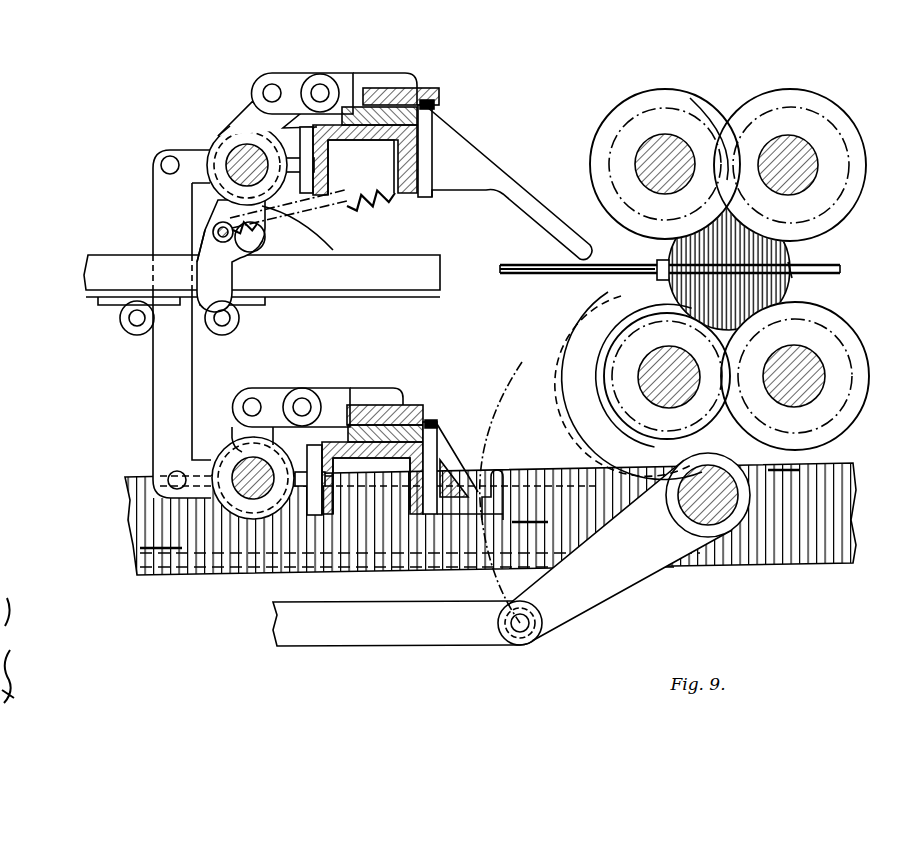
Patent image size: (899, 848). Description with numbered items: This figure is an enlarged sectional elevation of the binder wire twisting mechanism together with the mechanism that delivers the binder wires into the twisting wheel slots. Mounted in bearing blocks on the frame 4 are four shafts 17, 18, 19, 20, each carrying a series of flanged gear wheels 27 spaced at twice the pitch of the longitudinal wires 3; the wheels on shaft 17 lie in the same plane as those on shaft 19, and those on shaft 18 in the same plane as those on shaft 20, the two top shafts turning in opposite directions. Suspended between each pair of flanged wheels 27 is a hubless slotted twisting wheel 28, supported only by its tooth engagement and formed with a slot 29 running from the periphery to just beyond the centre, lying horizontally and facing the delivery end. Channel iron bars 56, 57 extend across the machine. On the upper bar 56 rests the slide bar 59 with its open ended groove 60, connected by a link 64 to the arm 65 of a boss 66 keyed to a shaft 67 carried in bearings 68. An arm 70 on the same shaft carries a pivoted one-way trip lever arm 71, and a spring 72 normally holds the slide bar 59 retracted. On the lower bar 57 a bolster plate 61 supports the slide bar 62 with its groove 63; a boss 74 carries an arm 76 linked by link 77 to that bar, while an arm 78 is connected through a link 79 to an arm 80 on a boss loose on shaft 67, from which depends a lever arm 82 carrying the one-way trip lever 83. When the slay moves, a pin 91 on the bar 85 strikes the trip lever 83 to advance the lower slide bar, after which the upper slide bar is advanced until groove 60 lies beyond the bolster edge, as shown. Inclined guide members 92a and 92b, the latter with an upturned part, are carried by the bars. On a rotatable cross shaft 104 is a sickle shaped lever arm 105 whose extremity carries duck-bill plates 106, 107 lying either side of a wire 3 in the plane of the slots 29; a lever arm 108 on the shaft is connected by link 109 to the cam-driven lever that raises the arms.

The longitudinal wires 3 is at (524, 263).
The frame 4 is at (817, 560).
The shaft 17 is at (665, 164).
The shaft 18 is at (791, 165).
The shaft 19 is at (795, 376).
The shaft 20 is at (667, 376).
The flanged gear wheels 27 is at (590, 188).
The slotted twisting wheel 28 is at (792, 260).
The slot 29 is at (700, 270).
The upper channel iron bar 56 is at (396, 160).
The lower channel iron bar 57 is at (408, 466).
The slide bar 59 is at (440, 96).
The open ended groove 60 is at (436, 107).
The bolster plate 61 is at (346, 435).
The slide bar 62 is at (423, 402).
The open ended groove 63 is at (440, 421).
The link 64 is at (303, 88).
The arm 65 is at (250, 112).
The boss 66 is at (230, 130).
The shaft 67 is at (260, 165).
The bearings 68 is at (300, 208).
The arm 70 is at (220, 206).
The one-way trip lever arm 71 is at (230, 256).
The spring 72 is at (378, 208).
The boss 74 is at (224, 452).
The arm 76 is at (238, 424).
The link 77 is at (262, 388).
The arm 78 is at (206, 458).
The link 79 is at (182, 324).
The arm 80 is at (196, 146).
The lever arm 82 is at (307, 232).
The one-way trip lever 83 is at (268, 249).
The bar 85 is at (262, 295).
The steel pin 91 is at (230, 322).
The inclined guide members 92a is at (512, 182).
The inclined guide members 92b is at (492, 492).
The rotatable cross shaft 104 is at (708, 495).
The sickle shaped lever arm 105 is at (564, 360).
The plate 106 is at (655, 262).
The plate 107 is at (729, 269).
The lever arm 108 is at (744, 459).
The link 109 is at (407, 623).